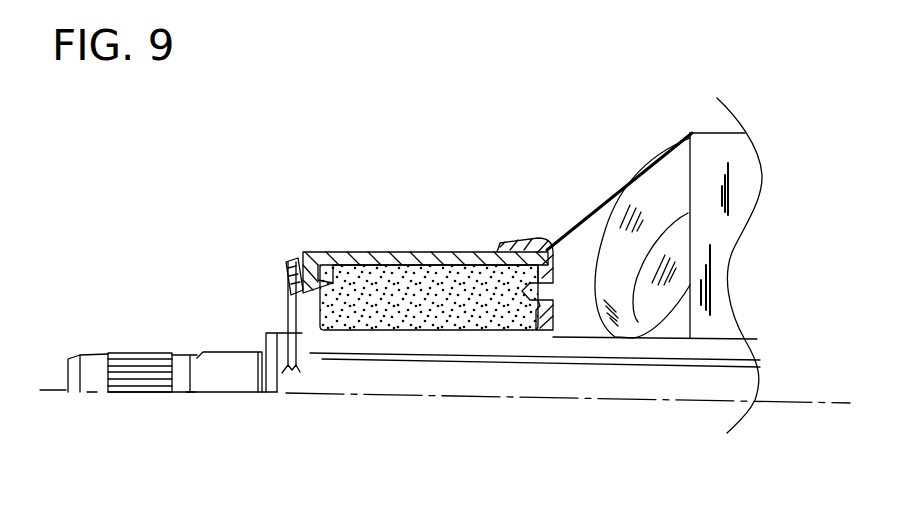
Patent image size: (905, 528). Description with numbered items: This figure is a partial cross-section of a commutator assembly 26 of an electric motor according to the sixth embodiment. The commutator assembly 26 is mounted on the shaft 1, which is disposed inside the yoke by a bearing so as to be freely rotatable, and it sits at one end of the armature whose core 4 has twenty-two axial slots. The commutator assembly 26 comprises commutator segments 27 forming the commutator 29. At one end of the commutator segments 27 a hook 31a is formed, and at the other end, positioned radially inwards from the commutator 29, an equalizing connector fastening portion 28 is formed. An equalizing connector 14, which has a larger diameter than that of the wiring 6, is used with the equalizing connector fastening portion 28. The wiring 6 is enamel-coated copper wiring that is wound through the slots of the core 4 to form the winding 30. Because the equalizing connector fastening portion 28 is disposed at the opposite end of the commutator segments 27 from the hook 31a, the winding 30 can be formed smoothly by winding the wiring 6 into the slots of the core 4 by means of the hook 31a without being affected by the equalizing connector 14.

The shaft 1 is at (368, 384).
The core 4 is at (712, 152).
The wiring 6 is at (613, 192).
The equalizing connector 14 is at (290, 305).
The commutator assembly 26 is at (420, 204).
The commutator segment 27 is at (393, 250).
The equalizing connector fastening portion 28 is at (293, 258).
The commutator 29 is at (443, 278).
The winding 30 is at (637, 322).
The hook 31a is at (513, 235).